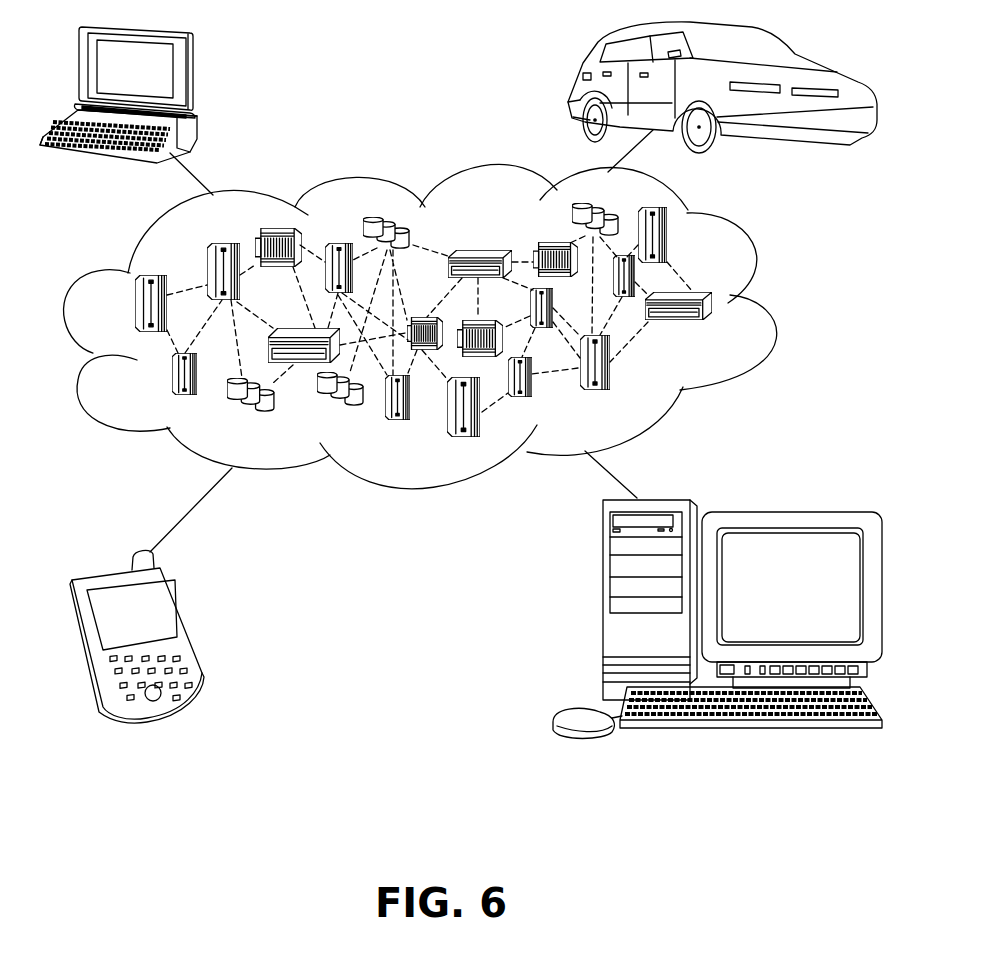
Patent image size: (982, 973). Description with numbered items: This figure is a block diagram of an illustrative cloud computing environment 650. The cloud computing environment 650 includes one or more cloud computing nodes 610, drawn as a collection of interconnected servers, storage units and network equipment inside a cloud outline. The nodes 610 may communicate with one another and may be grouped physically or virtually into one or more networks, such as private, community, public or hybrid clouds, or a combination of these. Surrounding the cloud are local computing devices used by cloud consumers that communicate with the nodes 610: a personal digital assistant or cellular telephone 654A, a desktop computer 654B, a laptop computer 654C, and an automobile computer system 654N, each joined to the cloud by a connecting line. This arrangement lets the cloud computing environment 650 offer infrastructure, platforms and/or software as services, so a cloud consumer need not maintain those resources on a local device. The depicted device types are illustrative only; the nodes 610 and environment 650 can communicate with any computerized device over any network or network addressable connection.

The laptop computer 654C is at (193, 73).
The automobile computer system 654N is at (578, 78).
The cloud computing environment 650 is at (755, 268).
The cloud computing nodes 610 is at (732, 326).
The personal digital assistant (PDA) or cellular telephone 654A is at (185, 627).
The desktop computer 654B is at (603, 608).